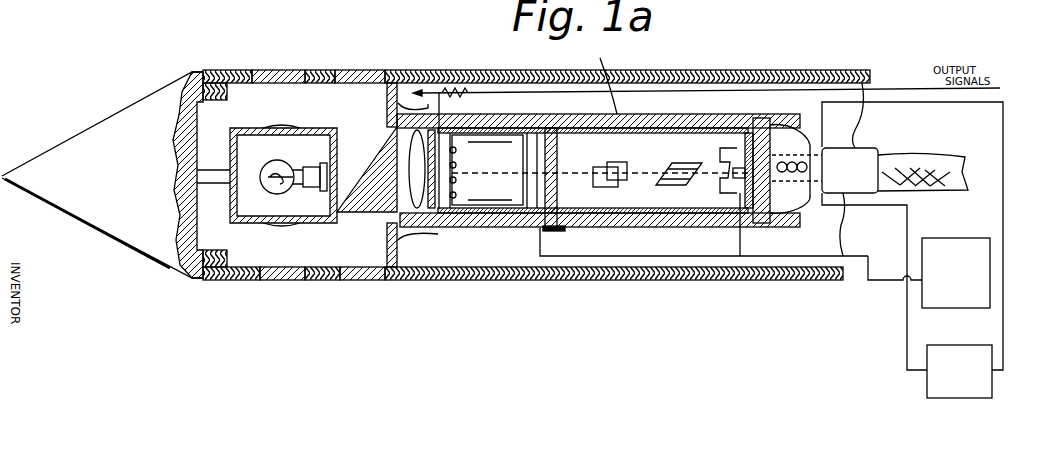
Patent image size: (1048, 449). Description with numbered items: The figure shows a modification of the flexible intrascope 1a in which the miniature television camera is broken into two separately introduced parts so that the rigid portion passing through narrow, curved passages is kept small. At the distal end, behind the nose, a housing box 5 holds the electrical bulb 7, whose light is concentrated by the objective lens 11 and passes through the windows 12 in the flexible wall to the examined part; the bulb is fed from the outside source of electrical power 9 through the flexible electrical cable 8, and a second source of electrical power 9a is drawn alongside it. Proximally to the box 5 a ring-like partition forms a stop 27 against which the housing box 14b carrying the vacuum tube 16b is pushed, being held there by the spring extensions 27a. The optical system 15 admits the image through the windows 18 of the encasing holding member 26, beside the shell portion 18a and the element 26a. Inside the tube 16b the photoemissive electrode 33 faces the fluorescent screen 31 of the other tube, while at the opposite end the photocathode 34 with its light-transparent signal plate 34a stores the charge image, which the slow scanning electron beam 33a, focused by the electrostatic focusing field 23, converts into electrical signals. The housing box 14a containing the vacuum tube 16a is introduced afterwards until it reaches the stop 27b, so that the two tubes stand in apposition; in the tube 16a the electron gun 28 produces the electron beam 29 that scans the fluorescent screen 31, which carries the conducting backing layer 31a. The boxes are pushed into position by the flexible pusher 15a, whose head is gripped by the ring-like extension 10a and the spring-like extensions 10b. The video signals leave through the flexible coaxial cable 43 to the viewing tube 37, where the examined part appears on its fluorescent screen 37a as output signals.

The flexible intrascope 1a is at (215, 72).
The encasing holding member 26 is at (720, 70).
The shell section 18a is at (365, 48).
The windows 12 is at (280, 280).
The windows 18 is at (360, 280).
The housing box 5 is at (315, 128).
The electrical bulb 7 is at (268, 170).
The objective lens 11 is at (270, 223).
The stop 27 is at (388, 100).
The optical system 15 is at (390, 135).
The vacuum tube 16b is at (490, 212).
The electron gun 28 is at (738, 158).
The photocathode 34 is at (440, 234).
The housing box 14b is at (478, 113).
The photoemissive electrode 33 is at (530, 131).
The scanning electron beam 33a is at (486, 170).
The electrostatic focusing field 23 is at (483, 194).
The signal plate 34a is at (552, 115).
The stop 27b is at (543, 222).
The fluorescent screen 31 is at (582, 150).
The conducting backing layer 31a is at (596, 146).
The electron beam 29 is at (652, 172).
The housing box 14a is at (593, 78).
The insulation 26a is at (662, 53).
The flexible coaxial cable 43 is at (687, 89).
The viewing tube 37 is at (971, 6).
The fluorescent screen 37a is at (1029, 0).
The spring-like extensions 10b is at (780, 226).
The flexible pusher 15a is at (858, 148).
The flexible electrical cable 8 is at (857, 256).
The source of electrical power 9 is at (947, 308).
The source of power 9a is at (937, 398).
The spring extensions 27a is at (580, 237).
The ring-like extension 10a is at (580, 257).
The vacuum tube 16a is at (667, 197).